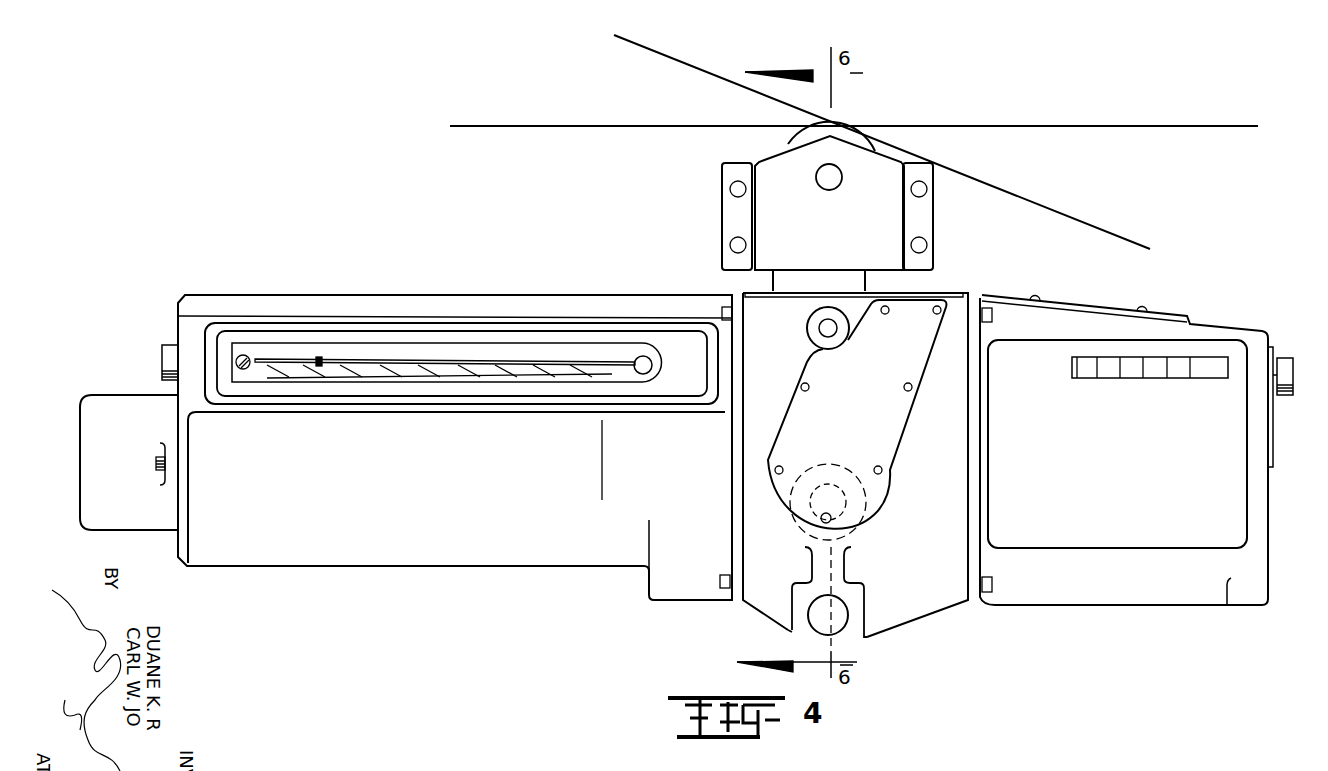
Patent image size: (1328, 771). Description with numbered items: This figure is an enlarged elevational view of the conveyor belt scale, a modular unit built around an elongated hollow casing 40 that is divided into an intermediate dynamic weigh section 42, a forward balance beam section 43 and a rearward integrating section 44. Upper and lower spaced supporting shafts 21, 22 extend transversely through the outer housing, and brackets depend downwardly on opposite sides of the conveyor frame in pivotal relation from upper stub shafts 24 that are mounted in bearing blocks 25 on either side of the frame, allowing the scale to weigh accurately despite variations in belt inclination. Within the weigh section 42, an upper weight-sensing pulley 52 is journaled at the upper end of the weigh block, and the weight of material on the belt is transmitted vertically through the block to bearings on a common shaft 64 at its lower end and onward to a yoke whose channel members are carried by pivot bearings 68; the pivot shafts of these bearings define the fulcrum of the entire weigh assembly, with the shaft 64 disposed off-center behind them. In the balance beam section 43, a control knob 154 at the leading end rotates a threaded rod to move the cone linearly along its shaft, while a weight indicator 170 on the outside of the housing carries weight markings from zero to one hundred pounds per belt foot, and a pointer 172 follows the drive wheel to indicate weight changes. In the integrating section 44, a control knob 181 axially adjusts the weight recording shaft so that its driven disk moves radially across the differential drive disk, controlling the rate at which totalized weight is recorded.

The upper supporting shaft 21 is at (818, 328).
The lower supporting shaft 22 is at (832, 633).
The upper stub shaft 24 is at (816, 173).
The bearing block 25 is at (724, 200).
The elongated hollow casing 40 is at (638, 543).
The intermediate dynamic weigh section 42 is at (942, 613).
The forward balance beam section 43 is at (447, 565).
The rearward integrating section 44 is at (1165, 608).
The upper weight-sensing pulley 52 is at (793, 138).
The common shaft 64 is at (860, 518).
The pivot bearing 68 is at (783, 500).
The control knob 154 is at (162, 365).
The weight indicator 170 is at (452, 382).
The pointer 172 is at (318, 357).
The control knob 181 is at (1290, 358).